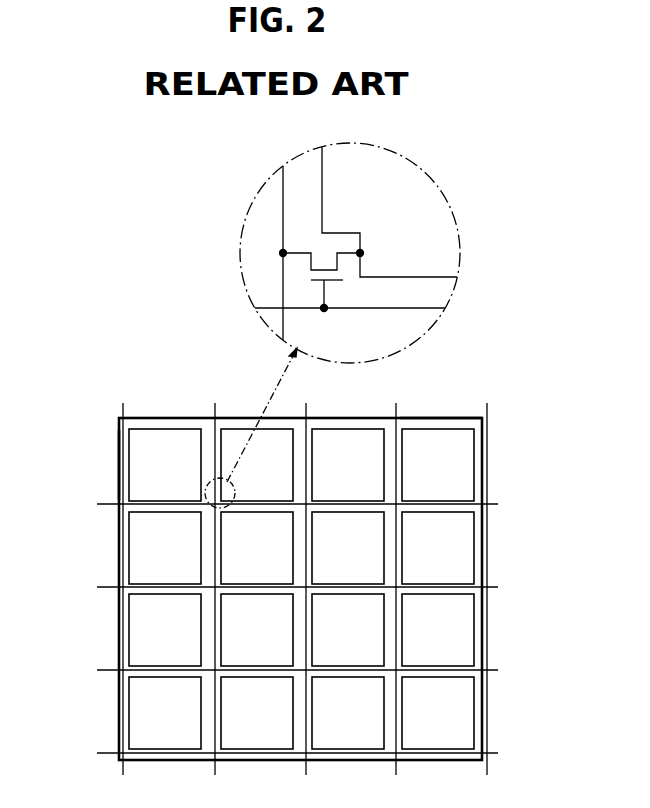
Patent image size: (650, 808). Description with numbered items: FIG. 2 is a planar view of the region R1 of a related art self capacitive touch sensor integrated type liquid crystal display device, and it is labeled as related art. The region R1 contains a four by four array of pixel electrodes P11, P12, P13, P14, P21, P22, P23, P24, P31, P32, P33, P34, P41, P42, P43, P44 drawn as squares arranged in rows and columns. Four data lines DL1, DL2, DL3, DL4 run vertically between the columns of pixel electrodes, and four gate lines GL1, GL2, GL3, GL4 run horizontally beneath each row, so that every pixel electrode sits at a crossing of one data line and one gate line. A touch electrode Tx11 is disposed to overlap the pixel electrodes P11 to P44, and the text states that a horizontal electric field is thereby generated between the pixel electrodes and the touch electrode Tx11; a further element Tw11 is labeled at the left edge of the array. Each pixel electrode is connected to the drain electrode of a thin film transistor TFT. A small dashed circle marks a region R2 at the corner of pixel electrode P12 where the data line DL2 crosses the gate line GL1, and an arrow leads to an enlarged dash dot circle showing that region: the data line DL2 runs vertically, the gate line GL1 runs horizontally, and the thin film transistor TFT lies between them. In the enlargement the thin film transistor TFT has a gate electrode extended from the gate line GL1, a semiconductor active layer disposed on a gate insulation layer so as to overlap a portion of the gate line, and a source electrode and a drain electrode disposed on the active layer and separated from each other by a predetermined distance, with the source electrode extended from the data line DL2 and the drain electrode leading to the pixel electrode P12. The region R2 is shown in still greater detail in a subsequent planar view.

The region R1 is at (68, 376).
The region R2 is at (250, 210).
The data line DL1 is at (124, 580).
The data line DL2 is at (302, 205).
The data line DL3 is at (303, 579).
The data line DL4 is at (394, 579).
The gate line GL1 is at (403, 291).
The gate line GL2 is at (283, 585).
The gate line GL3 is at (283, 669).
The gate line GL4 is at (283, 751).
The touch electrode Tx11 is at (442, 418).
The touch sensing electrode Tw11 is at (120, 463).
The thin film transistor TFT is at (369, 229).
The pixel electrode P11 is at (165, 465).
The pixel electrode P12 is at (480, 233).
The pixel electrode P13 is at (348, 465).
The pixel electrode P14 is at (438, 465).
The pixel electrode P21 is at (165, 548).
The pixel electrode P22 is at (257, 548).
The pixel electrode P23 is at (348, 548).
The pixel electrode P24 is at (438, 548).
The pixel electrode P31 is at (165, 630).
The pixel electrode P32 is at (257, 630).
The pixel electrode P33 is at (348, 630).
The pixel electrode P34 is at (438, 630).
The pixel electrode P41 is at (165, 713).
The pixel electrode P42 is at (257, 713).
The pixel electrode P43 is at (348, 713).
The pixel electrode P44 is at (438, 713).